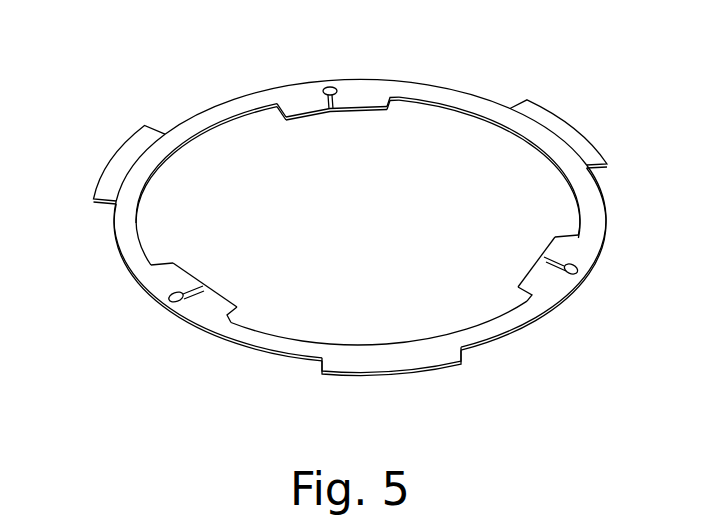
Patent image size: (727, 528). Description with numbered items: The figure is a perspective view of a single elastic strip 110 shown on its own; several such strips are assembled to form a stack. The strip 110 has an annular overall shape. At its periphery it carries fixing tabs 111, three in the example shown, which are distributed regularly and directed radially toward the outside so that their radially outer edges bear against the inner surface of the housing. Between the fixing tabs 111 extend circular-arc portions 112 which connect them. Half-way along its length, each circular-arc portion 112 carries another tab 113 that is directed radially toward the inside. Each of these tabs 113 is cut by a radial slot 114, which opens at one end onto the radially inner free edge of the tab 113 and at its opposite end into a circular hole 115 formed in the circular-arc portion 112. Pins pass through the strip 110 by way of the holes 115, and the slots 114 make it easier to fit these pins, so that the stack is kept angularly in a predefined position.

The strip 110 is at (592, 201).
The fixing tabs 111 is at (127, 141).
The circular-arc portions 112 is at (253, 117).
The tabs 113 is at (303, 118).
The radial slot 114 is at (337, 103).
The circular hole 115 is at (328, 86).